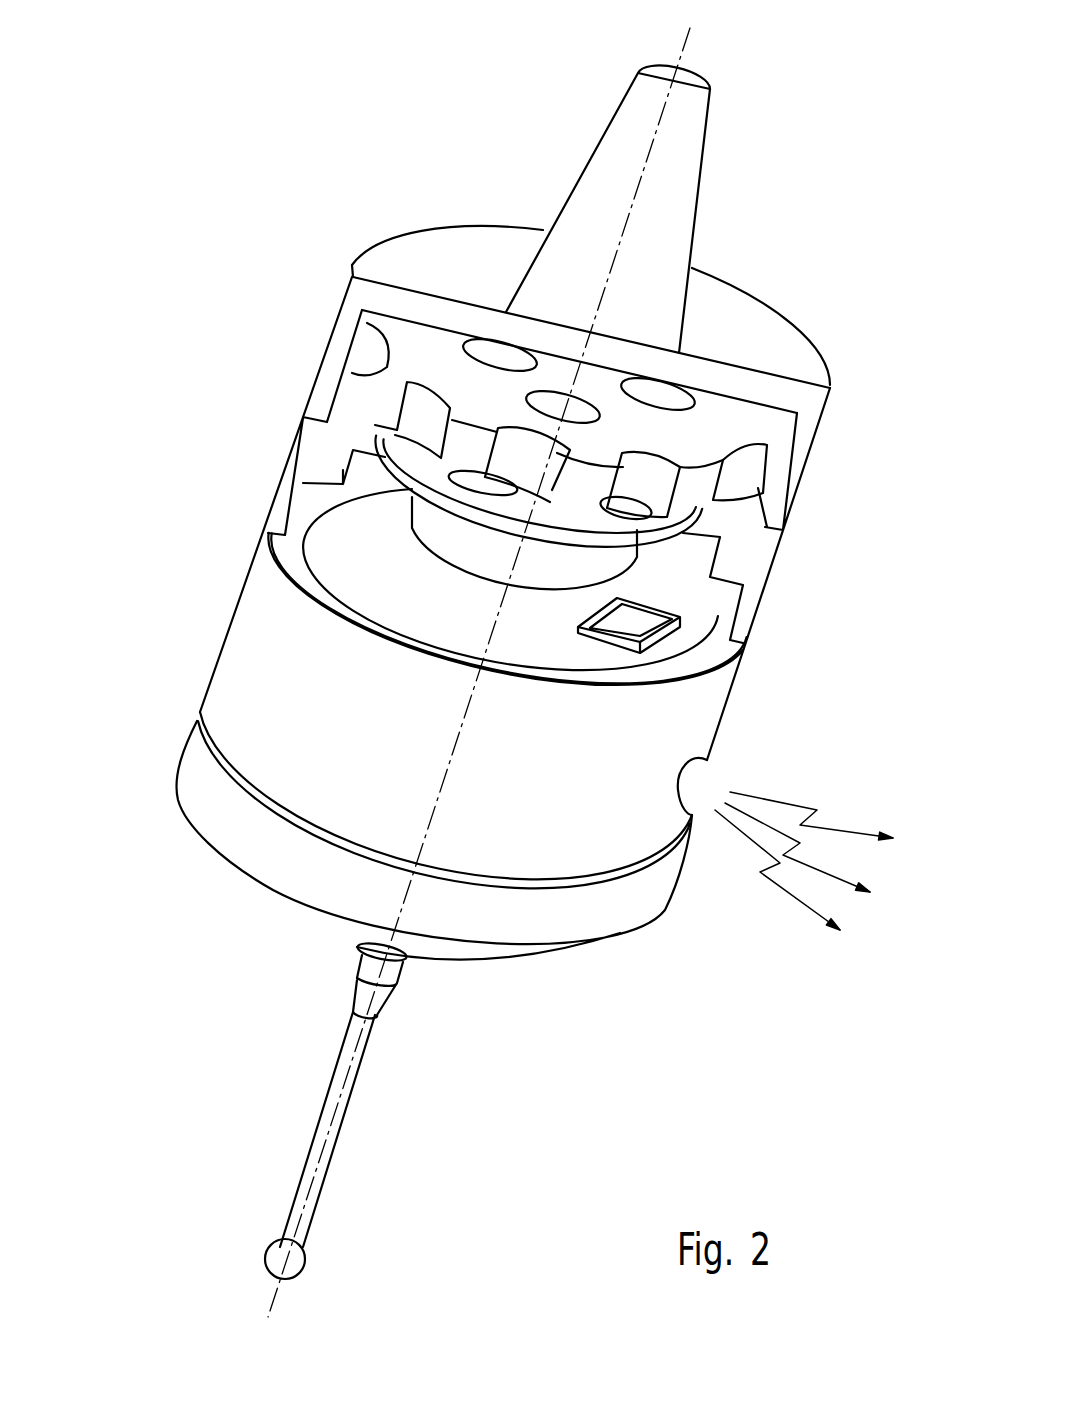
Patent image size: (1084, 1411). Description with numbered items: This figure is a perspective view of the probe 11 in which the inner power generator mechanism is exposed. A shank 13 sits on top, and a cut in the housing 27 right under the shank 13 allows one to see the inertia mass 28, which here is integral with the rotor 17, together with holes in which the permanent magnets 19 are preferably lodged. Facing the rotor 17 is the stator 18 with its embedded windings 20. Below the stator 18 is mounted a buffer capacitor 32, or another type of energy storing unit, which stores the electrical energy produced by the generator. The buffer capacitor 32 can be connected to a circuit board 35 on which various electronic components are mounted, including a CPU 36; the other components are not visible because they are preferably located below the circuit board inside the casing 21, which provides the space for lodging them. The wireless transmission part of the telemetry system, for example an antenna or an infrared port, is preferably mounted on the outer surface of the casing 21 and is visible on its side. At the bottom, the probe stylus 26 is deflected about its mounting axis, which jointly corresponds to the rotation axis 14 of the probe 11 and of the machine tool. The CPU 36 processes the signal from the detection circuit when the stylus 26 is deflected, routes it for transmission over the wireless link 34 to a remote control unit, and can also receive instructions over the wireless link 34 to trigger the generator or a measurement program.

The probe 11 is at (716, 1009).
The shank 13 is at (703, 185).
The rotation axis 14 is at (430, 812).
The rotor 17 is at (413, 357).
The stator 18 is at (647, 542).
The permanent magnets 19 is at (555, 400).
The windings 20 is at (635, 508).
The casing 21 is at (232, 627).
The probe stylus 26 is at (293, 1262).
The housing 27 is at (712, 378).
The inertia mass 28 is at (693, 435).
The buffer capacitor 32 is at (600, 572).
The wireless link 34 is at (886, 912).
The circuit board 35 is at (365, 573).
The CPU 36 is at (670, 625).